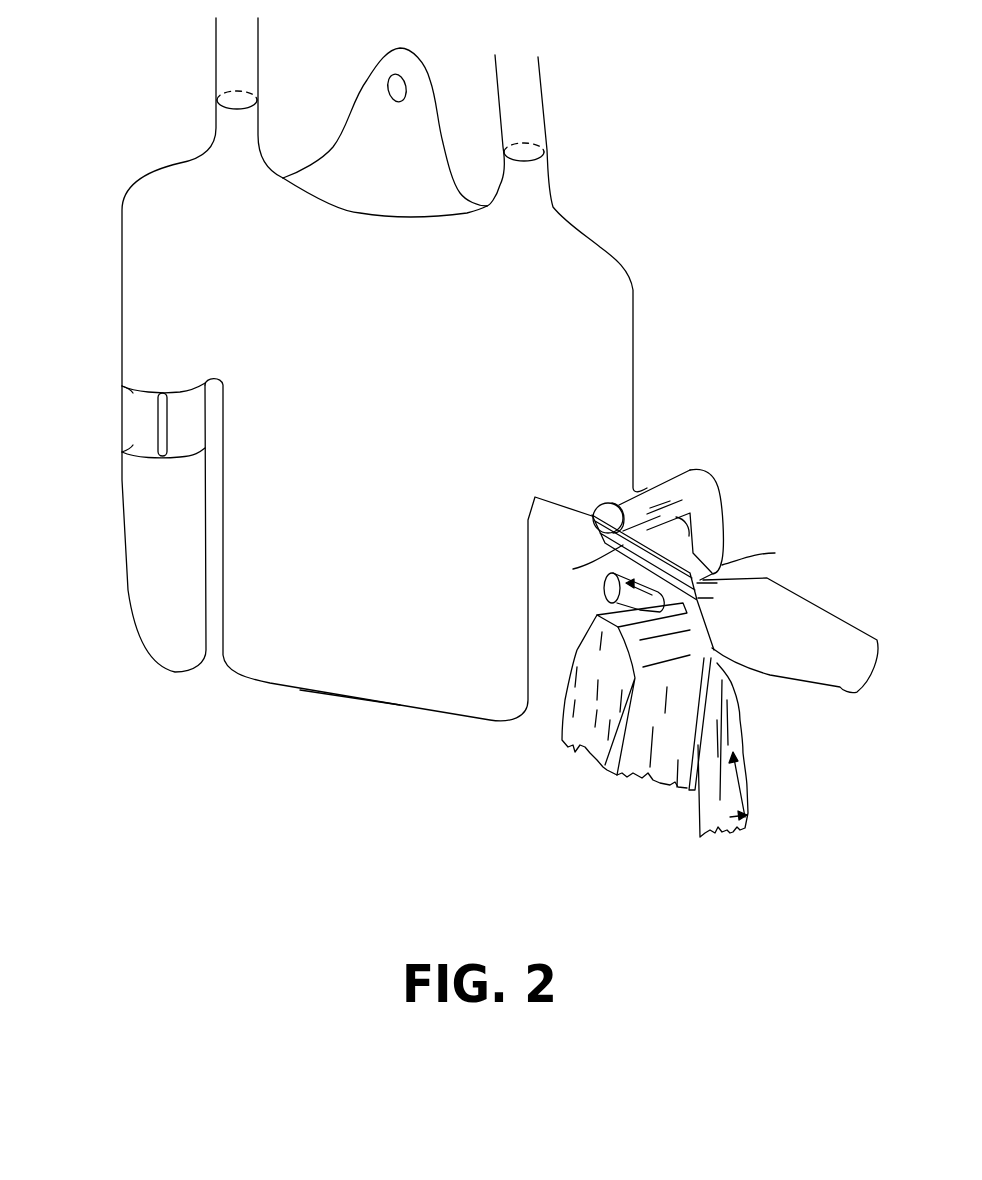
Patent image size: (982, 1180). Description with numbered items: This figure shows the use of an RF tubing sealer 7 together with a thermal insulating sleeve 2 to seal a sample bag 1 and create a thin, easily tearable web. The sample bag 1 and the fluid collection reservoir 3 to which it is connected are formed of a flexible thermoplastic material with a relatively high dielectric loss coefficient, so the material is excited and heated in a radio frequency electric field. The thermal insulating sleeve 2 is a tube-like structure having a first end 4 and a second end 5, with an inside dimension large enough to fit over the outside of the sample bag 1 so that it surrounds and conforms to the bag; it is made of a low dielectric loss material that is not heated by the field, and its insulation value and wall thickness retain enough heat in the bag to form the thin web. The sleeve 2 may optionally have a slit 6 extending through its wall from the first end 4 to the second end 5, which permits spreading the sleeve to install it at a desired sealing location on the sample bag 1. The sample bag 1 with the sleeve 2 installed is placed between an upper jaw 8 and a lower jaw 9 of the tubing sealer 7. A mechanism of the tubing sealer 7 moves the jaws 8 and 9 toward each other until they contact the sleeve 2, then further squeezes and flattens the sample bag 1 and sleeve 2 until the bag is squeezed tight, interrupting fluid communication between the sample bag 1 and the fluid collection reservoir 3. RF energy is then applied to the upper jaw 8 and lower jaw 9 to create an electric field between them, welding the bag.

The sample bag 1 is at (147, 553).
The thermal insulating sleeve 2 is at (133, 413).
The fluid collection reservoir 3 is at (381, 650).
The first end 4 is at (122, 462).
The second end 5 is at (122, 387).
The slit 6 is at (175, 400).
The RF tubing sealer 7 is at (723, 531).
The upper jaw 8 is at (705, 659).
The lower jaw 9 is at (672, 500).